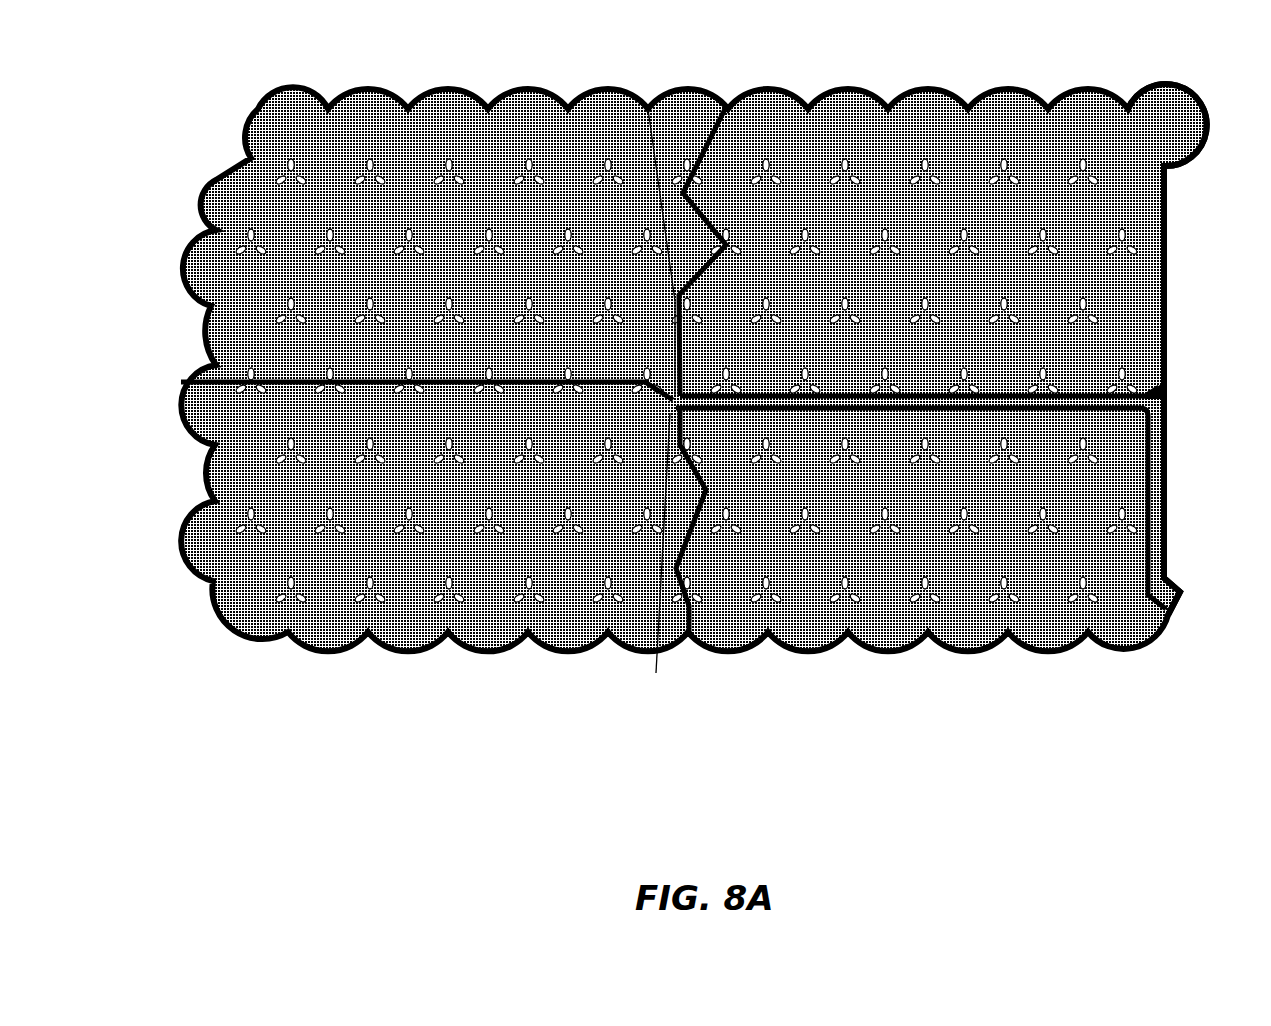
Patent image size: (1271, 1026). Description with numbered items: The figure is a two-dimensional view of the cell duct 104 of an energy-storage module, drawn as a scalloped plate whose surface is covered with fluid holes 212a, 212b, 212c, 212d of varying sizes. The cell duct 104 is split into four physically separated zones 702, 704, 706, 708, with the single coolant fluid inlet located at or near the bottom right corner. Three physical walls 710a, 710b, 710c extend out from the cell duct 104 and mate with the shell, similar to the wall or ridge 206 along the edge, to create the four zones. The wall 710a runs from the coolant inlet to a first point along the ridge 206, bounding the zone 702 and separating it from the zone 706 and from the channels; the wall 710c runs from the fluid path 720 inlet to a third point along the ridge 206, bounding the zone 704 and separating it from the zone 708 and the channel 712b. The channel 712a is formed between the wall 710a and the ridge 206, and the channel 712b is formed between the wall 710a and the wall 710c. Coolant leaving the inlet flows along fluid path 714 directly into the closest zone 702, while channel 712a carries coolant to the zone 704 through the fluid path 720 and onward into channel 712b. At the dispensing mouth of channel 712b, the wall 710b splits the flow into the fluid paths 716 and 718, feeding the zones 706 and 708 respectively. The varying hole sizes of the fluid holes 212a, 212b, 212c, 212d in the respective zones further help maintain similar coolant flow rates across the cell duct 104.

The cell duct 104 is at (1158, 258).
The ridge 206 is at (1162, 82).
The fluid hole 212a is at (1065, 592).
The fluid hole 212b is at (1075, 151).
The fluid hole 212c is at (510, 592).
The fluid hole 212d is at (520, 151).
The zone 702 is at (904, 521).
The zone 704 is at (915, 277).
The zone 706 is at (449, 521).
The zone 708 is at (449, 277).
The wall 710a is at (684, 628).
The wall 710b is at (167, 381).
The wall 710c is at (719, 102).
The channel 712a is at (1145, 497).
The channel 712b is at (1104, 389).
The fluid path 714 is at (1159, 608).
The fluid path 716 is at (649, 660).
The fluid path 718 is at (641, 101).
The fluid path 720 is at (1147, 372).